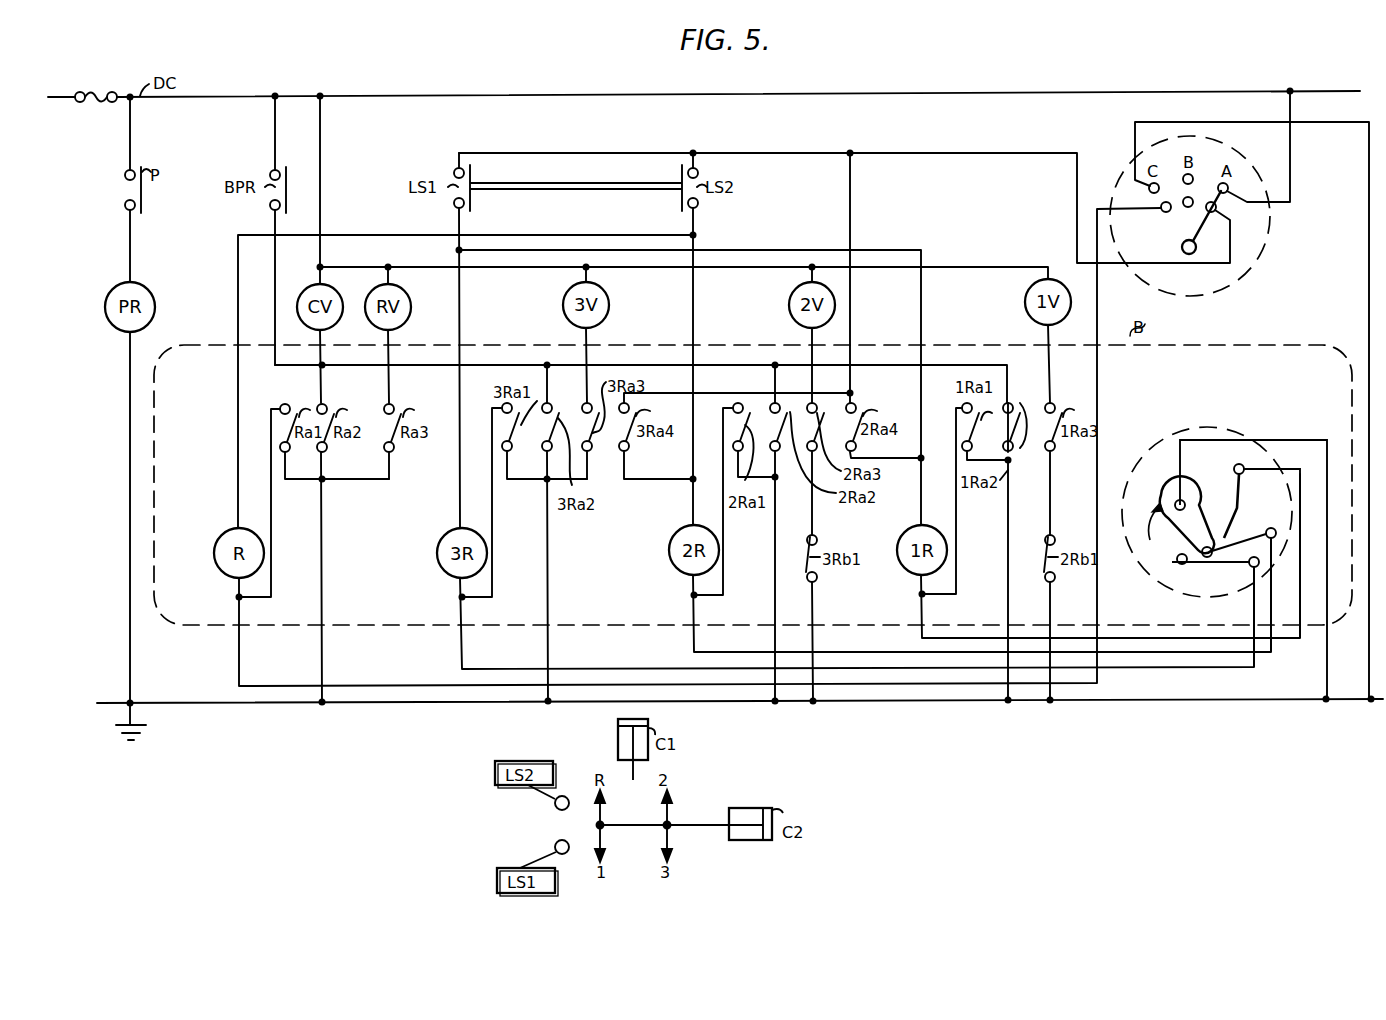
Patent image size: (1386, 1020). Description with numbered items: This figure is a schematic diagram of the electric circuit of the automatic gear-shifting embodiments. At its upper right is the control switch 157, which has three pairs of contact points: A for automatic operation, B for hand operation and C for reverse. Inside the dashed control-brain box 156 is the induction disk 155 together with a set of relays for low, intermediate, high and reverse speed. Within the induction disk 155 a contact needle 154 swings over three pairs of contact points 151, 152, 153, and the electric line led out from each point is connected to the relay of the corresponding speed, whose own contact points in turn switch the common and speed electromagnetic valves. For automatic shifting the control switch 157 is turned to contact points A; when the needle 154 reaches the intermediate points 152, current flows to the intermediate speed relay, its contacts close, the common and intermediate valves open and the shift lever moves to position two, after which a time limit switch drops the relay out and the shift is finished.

The contact point 151 is at (1262, 551).
The intermediate contact point 152 is at (1239, 582).
The contact point 153 is at (1215, 569).
The contact needle 154 is at (1174, 516).
The induction disk 155 is at (1216, 430).
The control box 156 is at (1347, 346).
The control switch 157 is at (1258, 258).